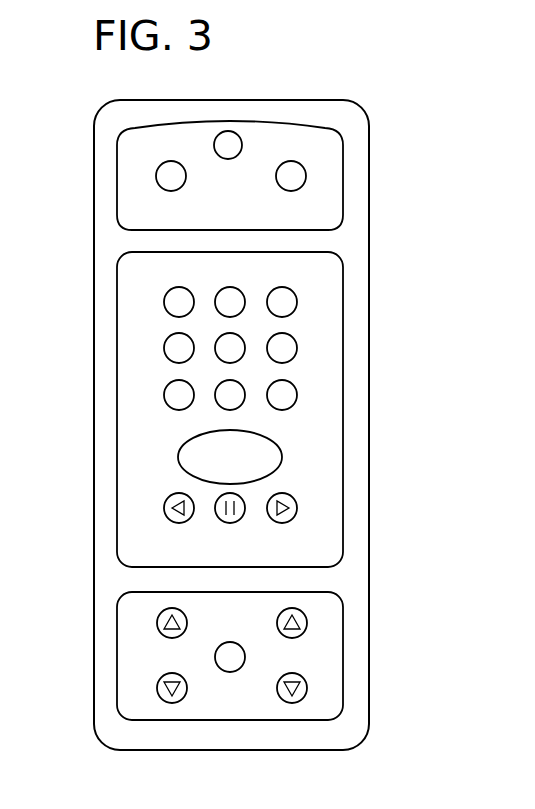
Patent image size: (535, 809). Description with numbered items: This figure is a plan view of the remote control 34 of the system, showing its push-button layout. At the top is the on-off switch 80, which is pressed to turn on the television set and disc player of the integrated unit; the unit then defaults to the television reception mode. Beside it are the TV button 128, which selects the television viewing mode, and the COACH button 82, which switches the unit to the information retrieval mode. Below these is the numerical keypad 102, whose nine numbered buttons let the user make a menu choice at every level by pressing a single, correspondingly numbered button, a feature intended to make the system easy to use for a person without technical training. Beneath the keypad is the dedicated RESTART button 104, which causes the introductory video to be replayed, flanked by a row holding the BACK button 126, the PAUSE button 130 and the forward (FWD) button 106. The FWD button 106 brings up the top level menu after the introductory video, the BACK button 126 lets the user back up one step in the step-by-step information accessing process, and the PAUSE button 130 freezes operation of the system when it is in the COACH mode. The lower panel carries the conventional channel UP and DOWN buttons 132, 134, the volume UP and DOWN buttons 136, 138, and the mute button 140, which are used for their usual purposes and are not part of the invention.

The remote control 34 is at (395, 126).
The on-off switch 80 is at (228, 131).
The COACH button 82 is at (306, 174).
The numerical keypad 102 is at (108, 278).
The RESTART button 104 is at (178, 457).
The forward (FWD) button 106 is at (297, 508).
The BACK button 126 is at (164, 509).
The TV button 128 is at (156, 176).
The PAUSE button 130 is at (241, 498).
The channel UP button 132 is at (157, 618).
The channel DOWN button 134 is at (157, 690).
The volume UP button 136 is at (307, 617).
The volume DOWN button 138 is at (307, 690).
The mute button 140 is at (236, 671).